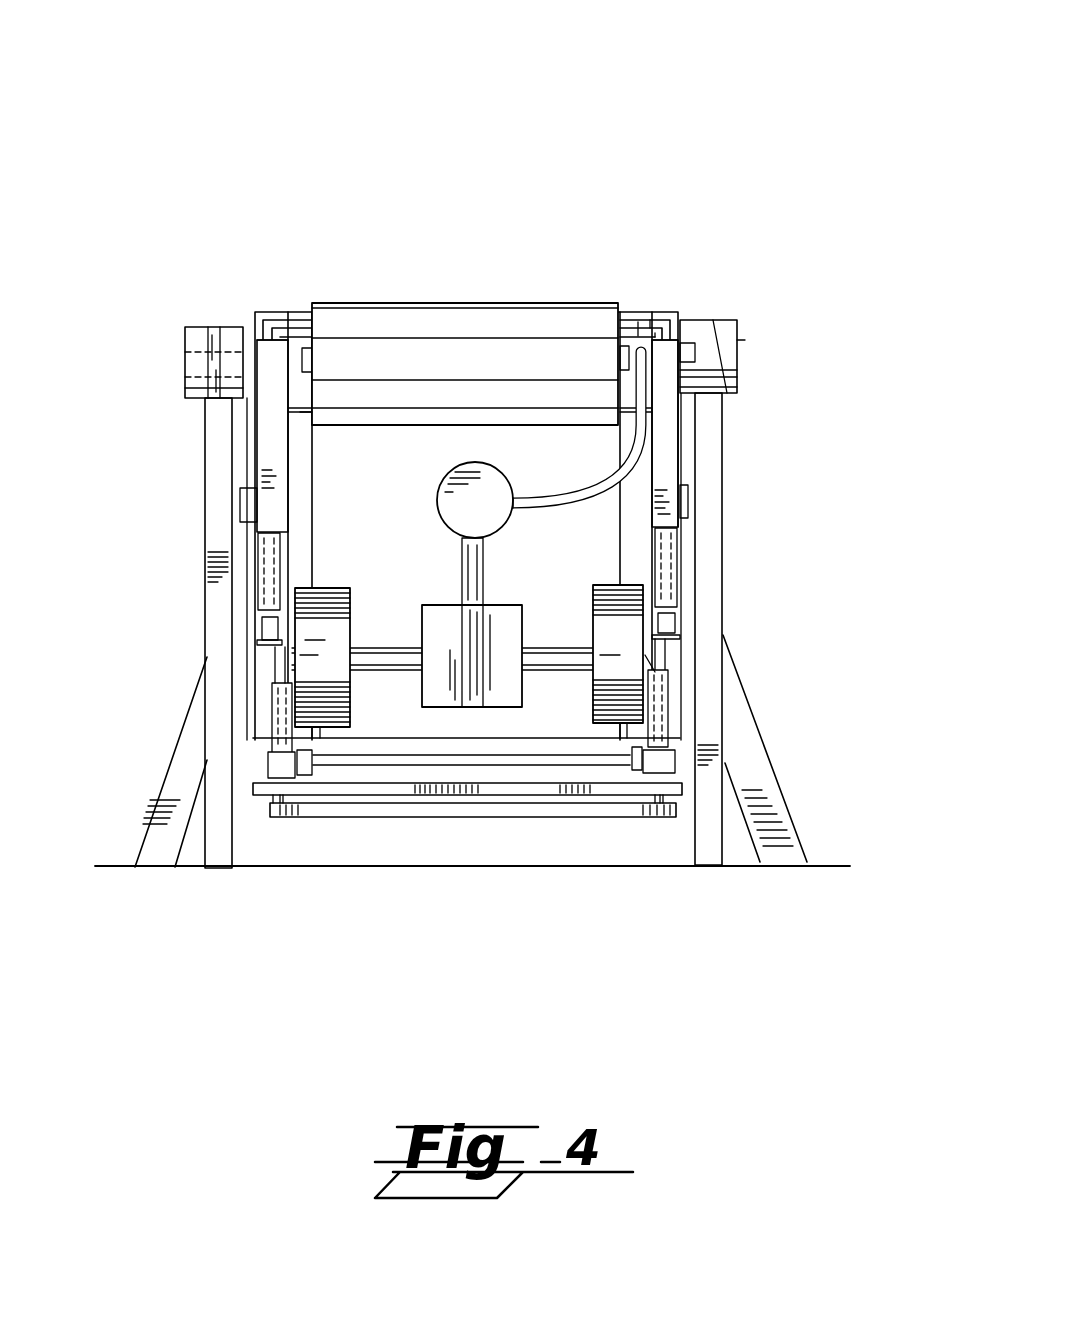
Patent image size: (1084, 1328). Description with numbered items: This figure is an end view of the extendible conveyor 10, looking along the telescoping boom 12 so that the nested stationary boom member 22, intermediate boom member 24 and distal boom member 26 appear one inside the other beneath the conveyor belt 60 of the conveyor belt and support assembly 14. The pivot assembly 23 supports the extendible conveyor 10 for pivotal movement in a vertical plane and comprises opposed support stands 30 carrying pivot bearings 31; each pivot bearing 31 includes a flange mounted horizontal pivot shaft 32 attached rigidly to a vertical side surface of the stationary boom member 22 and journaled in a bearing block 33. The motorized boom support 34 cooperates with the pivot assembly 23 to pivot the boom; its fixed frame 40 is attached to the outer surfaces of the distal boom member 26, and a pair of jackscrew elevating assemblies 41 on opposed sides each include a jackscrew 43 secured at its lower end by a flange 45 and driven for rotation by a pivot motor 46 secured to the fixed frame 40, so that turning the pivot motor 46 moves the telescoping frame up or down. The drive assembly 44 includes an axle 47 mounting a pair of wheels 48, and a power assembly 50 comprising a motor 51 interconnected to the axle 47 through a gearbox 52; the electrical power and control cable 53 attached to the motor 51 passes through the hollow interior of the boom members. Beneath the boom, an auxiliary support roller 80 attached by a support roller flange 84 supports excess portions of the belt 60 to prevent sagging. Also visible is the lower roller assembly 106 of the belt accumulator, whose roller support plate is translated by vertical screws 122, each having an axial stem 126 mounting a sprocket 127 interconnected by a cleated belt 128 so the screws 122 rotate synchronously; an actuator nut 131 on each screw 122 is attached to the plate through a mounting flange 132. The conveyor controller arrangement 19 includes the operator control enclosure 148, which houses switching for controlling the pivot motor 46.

The extendible conveyor 10 is at (468, 118).
The telescoping boom 12 is at (241, 304).
The conveyor belt and support assembly 14 is at (591, 285).
The conveyor controller arrangement 19 is at (747, 340).
The stationary boom member 22 is at (650, 320).
The pivot assembly 23 is at (186, 506).
The intermediate boom member 24 is at (641, 320).
The distal boom member 26 is at (655, 333).
The support stand 30 is at (238, 572).
The pivot bearing 31 is at (172, 327).
The pivot shaft 32 is at (185, 363).
The bearing block 33 is at (185, 388).
The motorized boom support 34 is at (688, 434).
The fixed frame 40 is at (698, 465).
The jackscrew elevating assembly 41 is at (697, 538).
The jackscrew 43 is at (678, 552).
The drive assembly 44 is at (655, 668).
The flange 45 is at (675, 620).
The pivot motor 46 is at (690, 497).
The axle 47 is at (575, 648).
The wheels 48 is at (343, 627).
The power assembly 50 is at (421, 494).
The motor 51 is at (458, 463).
The gearbox 52 is at (440, 605).
The electrical power and control cable 53 is at (530, 503).
The conveyor belt 60 is at (455, 305).
The auxiliary support roller 80 is at (620, 437).
The support roller flange 84 is at (303, 413).
The lower roller assembly 106 is at (385, 788).
The screw 122 is at (278, 710).
The axial stem 126 is at (285, 803).
The sprocket 127 is at (292, 800).
The cleated belt 128 is at (525, 803).
The actuator nut 131 is at (272, 772).
The mounting flange 132 is at (630, 767).
The operator control enclosure 148 is at (810, 342).